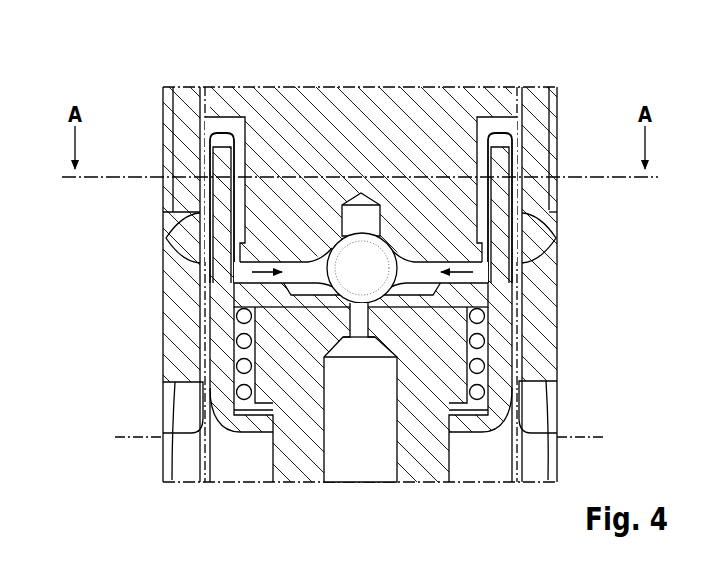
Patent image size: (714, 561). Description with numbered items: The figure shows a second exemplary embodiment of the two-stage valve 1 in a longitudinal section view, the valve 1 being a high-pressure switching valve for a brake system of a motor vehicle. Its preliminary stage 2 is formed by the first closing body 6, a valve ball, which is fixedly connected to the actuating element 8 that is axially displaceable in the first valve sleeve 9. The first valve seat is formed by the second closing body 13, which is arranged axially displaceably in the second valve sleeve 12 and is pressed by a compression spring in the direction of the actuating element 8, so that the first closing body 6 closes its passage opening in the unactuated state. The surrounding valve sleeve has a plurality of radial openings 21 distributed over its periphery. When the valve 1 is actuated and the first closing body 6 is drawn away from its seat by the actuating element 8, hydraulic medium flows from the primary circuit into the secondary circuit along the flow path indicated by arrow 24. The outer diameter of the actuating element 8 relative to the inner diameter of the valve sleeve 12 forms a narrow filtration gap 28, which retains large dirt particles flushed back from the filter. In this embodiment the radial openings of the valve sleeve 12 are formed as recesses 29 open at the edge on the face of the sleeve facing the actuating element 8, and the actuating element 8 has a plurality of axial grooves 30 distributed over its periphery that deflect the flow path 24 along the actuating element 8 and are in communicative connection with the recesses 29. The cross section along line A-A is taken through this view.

The two-stage valve 1 is at (104, 83).
The preliminary stage 2 is at (326, 311).
The first closing body 6 is at (364, 245).
The actuating element 8 is at (362, 148).
The first valve sleeve 9 is at (533, 156).
The second valve sleeve 12 is at (498, 348).
The second closing body 13 is at (425, 397).
The radial openings 21 is at (200, 457).
The arrow 24 is at (115, 437).
The filtration gap 28 is at (492, 254).
The recesses 29 is at (217, 123).
The axial grooves 30 is at (243, 133).